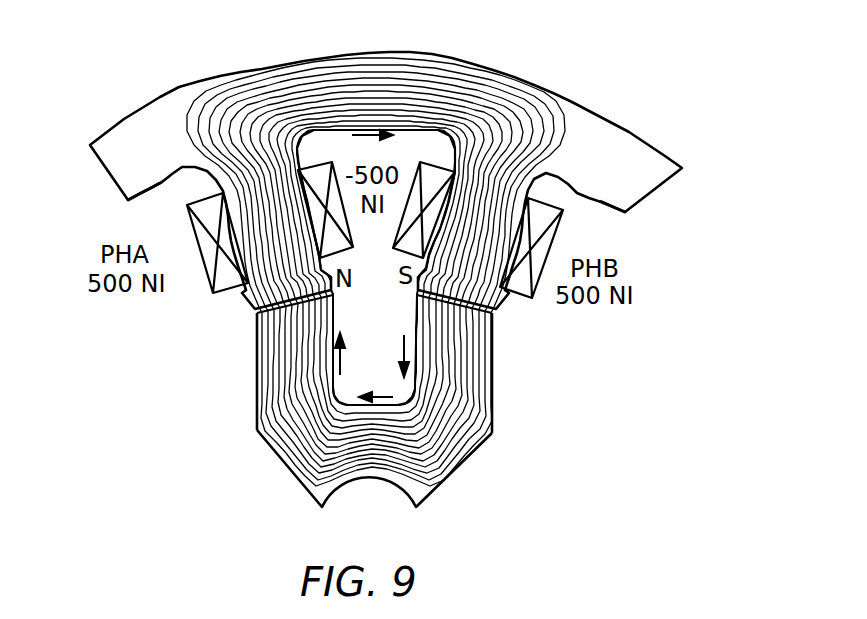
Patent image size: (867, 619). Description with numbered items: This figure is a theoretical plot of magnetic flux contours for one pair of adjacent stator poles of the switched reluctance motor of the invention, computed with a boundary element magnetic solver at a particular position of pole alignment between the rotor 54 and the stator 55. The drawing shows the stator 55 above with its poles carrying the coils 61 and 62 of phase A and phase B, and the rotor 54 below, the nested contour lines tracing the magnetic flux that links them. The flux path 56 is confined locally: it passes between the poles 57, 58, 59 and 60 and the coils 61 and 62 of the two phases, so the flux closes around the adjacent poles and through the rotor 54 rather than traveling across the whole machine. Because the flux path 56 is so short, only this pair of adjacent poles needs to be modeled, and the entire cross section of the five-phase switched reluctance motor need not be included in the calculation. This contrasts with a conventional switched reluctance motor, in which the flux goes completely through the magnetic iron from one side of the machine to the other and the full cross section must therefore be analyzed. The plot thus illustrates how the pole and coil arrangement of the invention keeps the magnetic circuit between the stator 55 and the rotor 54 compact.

The rotor 54 is at (258, 410).
The stator 55 is at (113, 187).
The flux path 56 is at (548, 95).
The pole 57 is at (258, 348).
The pole 58 is at (494, 365).
The pole 59 is at (256, 307).
The pole 60 is at (498, 308).
The coil 61 is at (313, 162).
The coil 62 is at (440, 160).